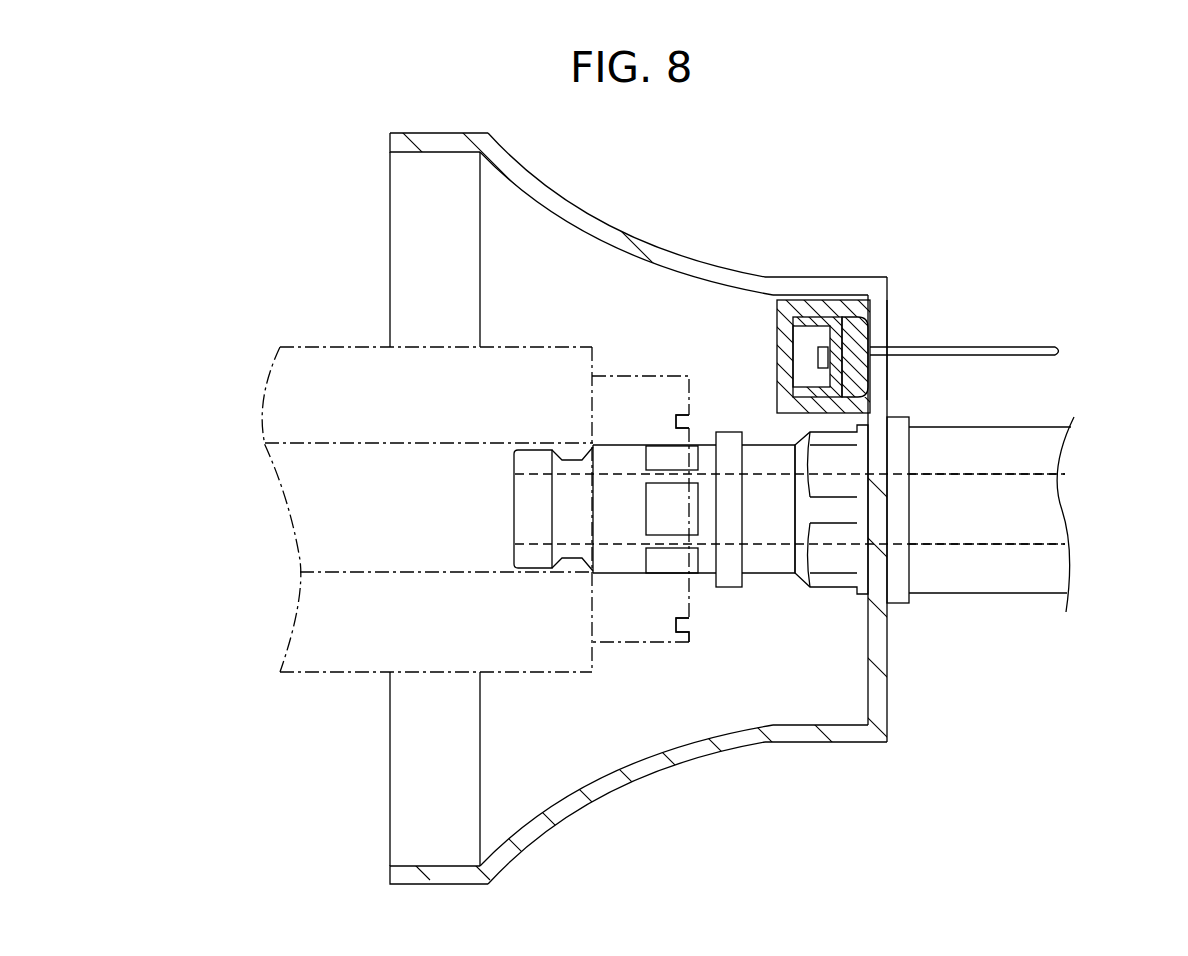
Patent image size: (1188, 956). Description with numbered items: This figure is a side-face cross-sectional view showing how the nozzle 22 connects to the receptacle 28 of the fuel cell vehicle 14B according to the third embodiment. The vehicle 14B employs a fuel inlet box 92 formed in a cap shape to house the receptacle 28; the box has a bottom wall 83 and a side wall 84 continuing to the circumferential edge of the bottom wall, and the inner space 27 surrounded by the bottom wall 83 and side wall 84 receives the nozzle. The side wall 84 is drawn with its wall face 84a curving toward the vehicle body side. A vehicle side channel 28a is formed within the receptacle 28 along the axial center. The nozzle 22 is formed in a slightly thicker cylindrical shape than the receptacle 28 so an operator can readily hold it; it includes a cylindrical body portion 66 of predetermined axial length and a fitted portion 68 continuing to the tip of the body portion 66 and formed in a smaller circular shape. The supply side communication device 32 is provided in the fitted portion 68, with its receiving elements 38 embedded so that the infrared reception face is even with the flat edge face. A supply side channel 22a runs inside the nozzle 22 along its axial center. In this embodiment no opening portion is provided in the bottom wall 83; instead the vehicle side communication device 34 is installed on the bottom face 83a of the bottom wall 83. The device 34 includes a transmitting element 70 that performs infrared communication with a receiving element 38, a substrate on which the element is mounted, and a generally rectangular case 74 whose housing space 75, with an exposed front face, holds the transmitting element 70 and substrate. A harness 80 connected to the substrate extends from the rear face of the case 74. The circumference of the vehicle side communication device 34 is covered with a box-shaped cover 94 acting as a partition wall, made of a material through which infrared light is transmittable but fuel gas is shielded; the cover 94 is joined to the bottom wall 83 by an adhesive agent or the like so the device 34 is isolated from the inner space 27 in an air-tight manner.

The fuel cell vehicle 14B is at (380, 158).
The side wall 84 is at (427, 132).
The curved wall portion 84a is at (577, 207).
The fuel inlet box 92 is at (756, 237).
The bottom wall 83 is at (875, 668).
The bottom face 83a is at (870, 701).
The inner space 27 is at (545, 780).
The body portion 66 is at (352, 346).
The nozzle 22 is at (250, 405).
The supply side channel 22a is at (340, 570).
The fitted portion 68 is at (622, 376).
The receiving element 38 is at (692, 624).
The supply side communication device 32 is at (692, 624).
The box-shaped cover 94 is at (784, 351).
The housing space 75 is at (806, 342).
The transmitting element 70 is at (820, 360).
The case 74 is at (855, 385).
The vehicle side communication device 34 is at (875, 320).
The harness 80 is at (1036, 346).
The receptacle 28 is at (1085, 415).
The vehicle side channel 28a is at (986, 543).